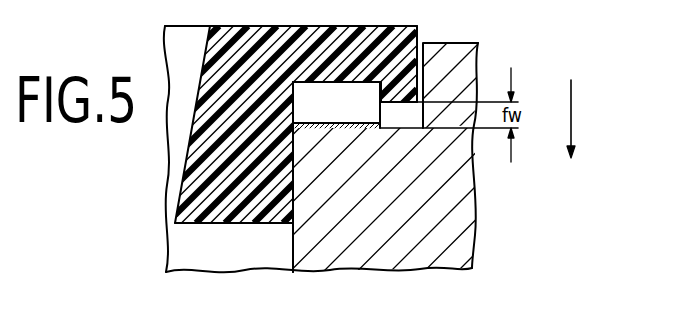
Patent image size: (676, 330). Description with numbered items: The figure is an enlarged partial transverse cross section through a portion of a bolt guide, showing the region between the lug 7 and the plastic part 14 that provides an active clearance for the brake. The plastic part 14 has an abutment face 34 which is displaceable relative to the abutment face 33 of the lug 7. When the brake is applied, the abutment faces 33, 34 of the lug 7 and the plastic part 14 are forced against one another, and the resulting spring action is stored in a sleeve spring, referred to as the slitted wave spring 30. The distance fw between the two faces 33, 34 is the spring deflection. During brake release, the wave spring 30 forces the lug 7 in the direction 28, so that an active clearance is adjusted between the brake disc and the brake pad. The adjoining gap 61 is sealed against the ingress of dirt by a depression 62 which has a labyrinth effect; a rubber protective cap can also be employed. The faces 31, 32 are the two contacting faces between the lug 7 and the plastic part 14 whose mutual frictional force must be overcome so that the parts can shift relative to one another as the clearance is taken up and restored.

The plastic part 14 is at (257, 57).
The depression 62 is at (383, 82).
The adjoining gap 61 is at (441, 46).
The slitted wave spring 30 is at (334, 123).
The lug 7 is at (365, 250).
The abutment face 34 is at (390, 105).
The abutment face 33 is at (408, 128).
The direction 28 is at (571, 119).
The face 31 is at (268, 207).
The face 32 is at (288, 253).